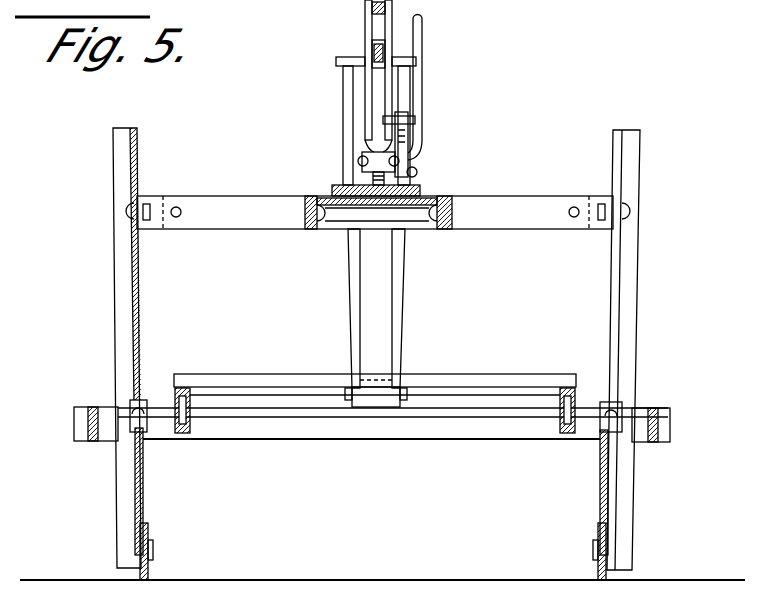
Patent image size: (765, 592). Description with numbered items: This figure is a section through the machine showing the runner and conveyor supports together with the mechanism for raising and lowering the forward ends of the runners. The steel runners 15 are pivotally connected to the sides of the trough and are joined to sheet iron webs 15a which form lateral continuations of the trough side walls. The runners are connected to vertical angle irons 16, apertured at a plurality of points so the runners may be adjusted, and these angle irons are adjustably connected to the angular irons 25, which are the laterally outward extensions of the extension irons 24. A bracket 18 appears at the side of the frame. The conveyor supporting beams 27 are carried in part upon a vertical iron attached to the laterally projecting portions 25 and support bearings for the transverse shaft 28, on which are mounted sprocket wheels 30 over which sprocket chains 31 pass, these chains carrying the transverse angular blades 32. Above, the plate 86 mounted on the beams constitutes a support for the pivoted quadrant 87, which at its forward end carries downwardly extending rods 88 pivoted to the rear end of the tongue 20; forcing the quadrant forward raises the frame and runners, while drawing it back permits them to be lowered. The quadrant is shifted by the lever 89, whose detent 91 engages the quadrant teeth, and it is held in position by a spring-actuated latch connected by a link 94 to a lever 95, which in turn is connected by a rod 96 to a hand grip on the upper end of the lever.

The steel runners 15 is at (150, 576).
The sheet iron webs 15a is at (136, 492).
The vertical angle irons 16 is at (120, 332).
The bearing bracket 18 is at (80, 420).
The tongue 20 is at (380, 400).
The extension irons 24 is at (306, 222).
The angular irons 25 is at (227, 198).
The conveyor supporting beams 27 is at (147, 440).
The transverse shaft 28 is at (527, 415).
The sprocket wheels 30 is at (192, 421).
The sprocket chains 31 is at (195, 440).
The transverse angular blades 32 is at (503, 383).
The plate 86 is at (387, 206).
The quadrant 87 is at (372, 52).
The downwardly extending rods 88 is at (403, 305).
The lever 89 is at (392, 17).
The detent 91 is at (364, 10).
The link 94 is at (432, 183).
The lever 95 is at (410, 165).
The rod 96 is at (424, 42).